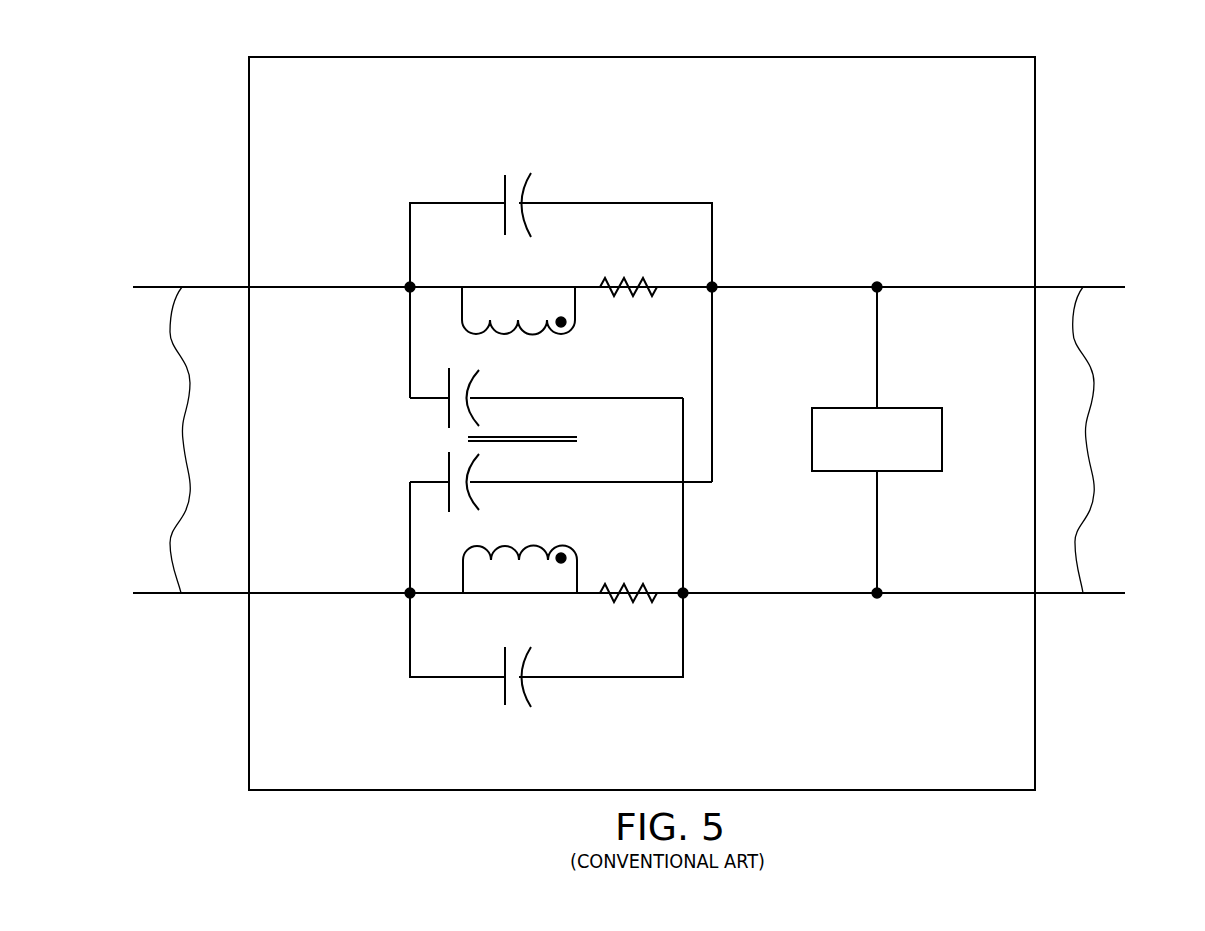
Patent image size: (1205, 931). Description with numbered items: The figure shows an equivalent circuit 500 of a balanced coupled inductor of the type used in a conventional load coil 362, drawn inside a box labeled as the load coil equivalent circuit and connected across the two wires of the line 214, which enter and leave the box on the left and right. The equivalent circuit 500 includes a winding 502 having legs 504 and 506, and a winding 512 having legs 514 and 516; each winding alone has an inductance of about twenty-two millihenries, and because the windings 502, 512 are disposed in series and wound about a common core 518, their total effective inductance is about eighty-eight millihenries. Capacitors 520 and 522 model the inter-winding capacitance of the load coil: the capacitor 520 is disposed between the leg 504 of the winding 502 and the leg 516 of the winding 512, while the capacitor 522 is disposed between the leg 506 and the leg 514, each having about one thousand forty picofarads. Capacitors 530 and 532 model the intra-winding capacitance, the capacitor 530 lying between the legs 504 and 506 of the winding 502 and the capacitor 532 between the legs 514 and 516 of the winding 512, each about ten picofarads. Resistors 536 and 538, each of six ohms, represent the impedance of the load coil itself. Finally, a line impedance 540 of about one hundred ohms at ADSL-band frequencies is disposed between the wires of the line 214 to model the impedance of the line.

The equivalent circuit 500 is at (836, 173).
The load coil 362 is at (1035, 130).
The line 214 is at (629, 440).
The winding 502 is at (532, 337).
The leg 504 is at (462, 302).
The leg 506 is at (575, 300).
The winding 512 is at (513, 551).
The leg 514 is at (468, 582).
The leg 516 is at (580, 571).
The common core 518 is at (570, 443).
The capacitor 520 is at (449, 407).
The capacitor 522 is at (449, 458).
The capacitor 530 is at (505, 190).
The capacitor 532 is at (527, 698).
The resistor 536 is at (627, 277).
The resistor 538 is at (628, 600).
The line impedance 540 is at (908, 408).